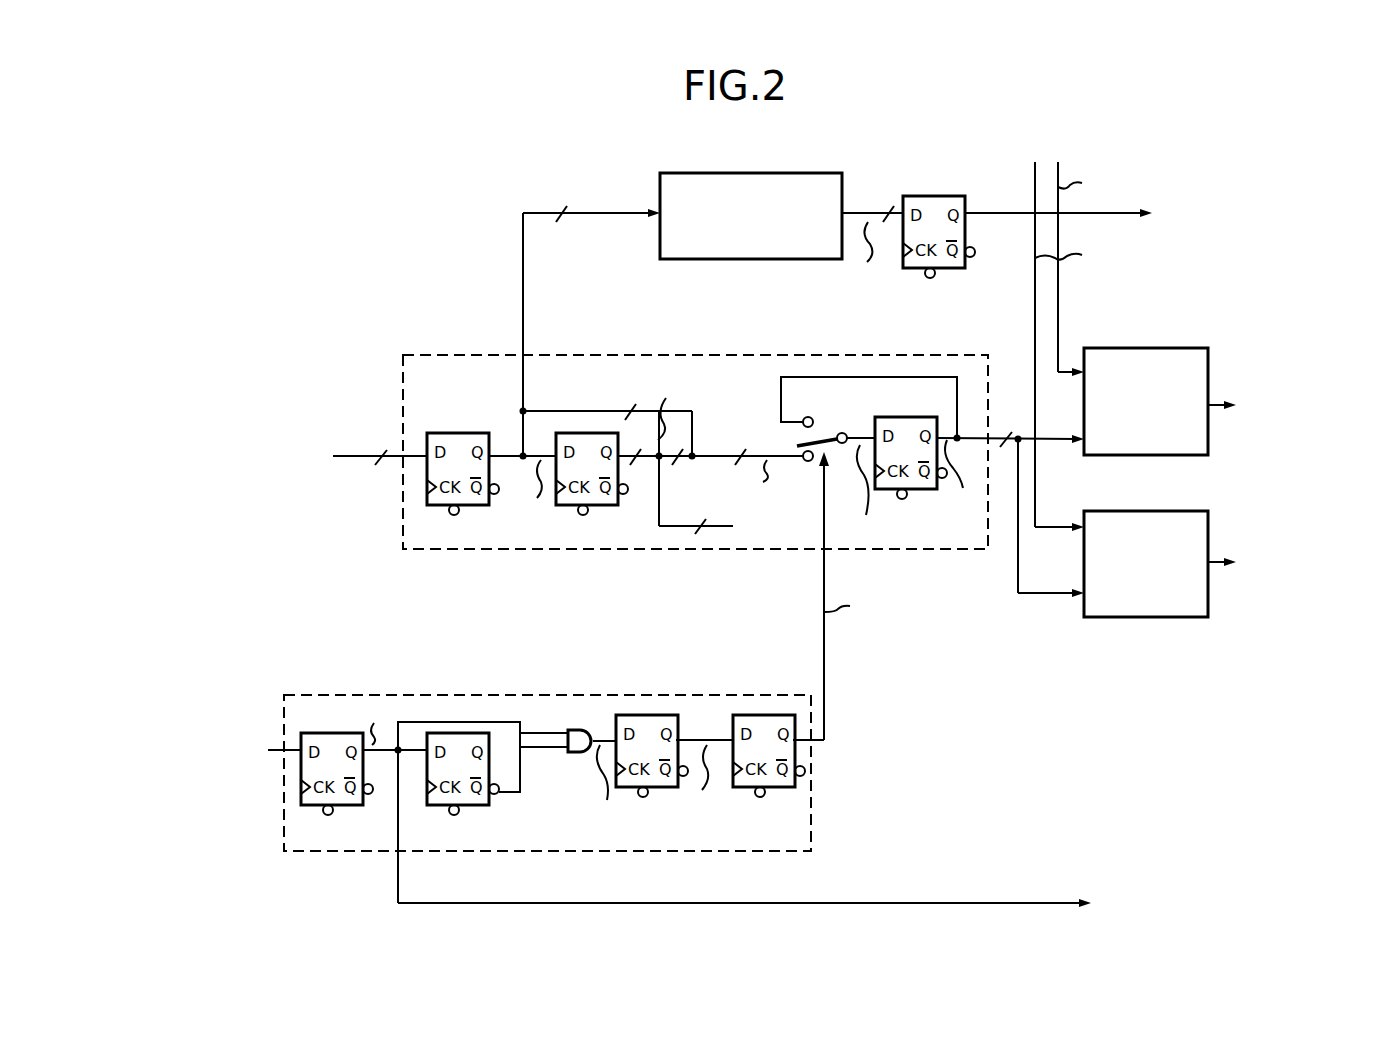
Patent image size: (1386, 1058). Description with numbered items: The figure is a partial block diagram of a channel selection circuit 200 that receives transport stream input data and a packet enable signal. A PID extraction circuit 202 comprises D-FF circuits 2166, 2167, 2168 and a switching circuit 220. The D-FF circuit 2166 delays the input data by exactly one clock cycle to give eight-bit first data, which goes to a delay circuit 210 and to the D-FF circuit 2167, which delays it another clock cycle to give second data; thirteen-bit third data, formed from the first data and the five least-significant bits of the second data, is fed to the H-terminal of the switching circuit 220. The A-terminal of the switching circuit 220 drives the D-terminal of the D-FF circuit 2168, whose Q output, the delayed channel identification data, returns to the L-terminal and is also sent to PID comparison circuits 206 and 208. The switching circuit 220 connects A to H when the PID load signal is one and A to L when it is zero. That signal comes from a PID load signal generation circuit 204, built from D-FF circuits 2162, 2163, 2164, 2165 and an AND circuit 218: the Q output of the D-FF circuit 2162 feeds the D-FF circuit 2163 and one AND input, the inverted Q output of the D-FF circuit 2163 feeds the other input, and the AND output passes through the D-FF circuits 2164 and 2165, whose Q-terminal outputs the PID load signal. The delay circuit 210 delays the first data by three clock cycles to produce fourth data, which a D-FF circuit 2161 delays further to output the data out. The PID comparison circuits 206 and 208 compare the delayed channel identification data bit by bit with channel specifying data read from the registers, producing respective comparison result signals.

The channel selection circuit 200 is at (538, 174).
The PID extraction circuit 202 is at (450, 552).
The PID load signal generation circuit 204 is at (812, 808).
The PID comparison circuit 206 is at (1152, 348).
The PID comparison circuit 208 is at (1180, 500).
The delay circuit 210 is at (743, 259).
The D-FF circuit 2161 is at (930, 196).
The D-FF circuit 2162 is at (374, 828).
The D-FF circuit 2163 is at (465, 733).
The D-FF circuit 2164 is at (640, 715).
The D-FF circuit 2165 is at (763, 715).
The D-FF circuit 2166 is at (470, 507).
The D-FF circuit 2167 is at (600, 510).
The D-FF circuit 2168 is at (917, 492).
The AND circuit 218 is at (578, 755).
The switching circuit 220 is at (832, 421).